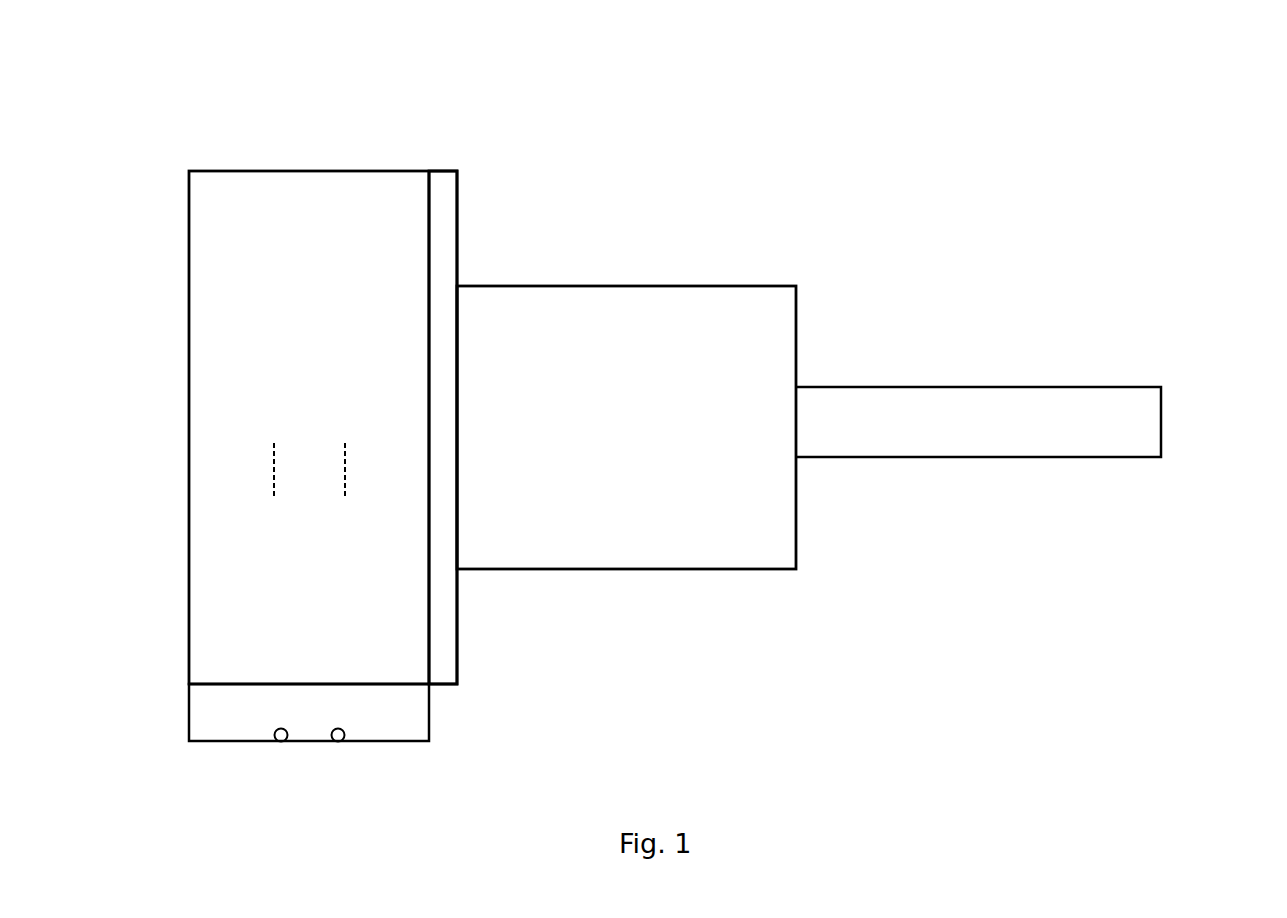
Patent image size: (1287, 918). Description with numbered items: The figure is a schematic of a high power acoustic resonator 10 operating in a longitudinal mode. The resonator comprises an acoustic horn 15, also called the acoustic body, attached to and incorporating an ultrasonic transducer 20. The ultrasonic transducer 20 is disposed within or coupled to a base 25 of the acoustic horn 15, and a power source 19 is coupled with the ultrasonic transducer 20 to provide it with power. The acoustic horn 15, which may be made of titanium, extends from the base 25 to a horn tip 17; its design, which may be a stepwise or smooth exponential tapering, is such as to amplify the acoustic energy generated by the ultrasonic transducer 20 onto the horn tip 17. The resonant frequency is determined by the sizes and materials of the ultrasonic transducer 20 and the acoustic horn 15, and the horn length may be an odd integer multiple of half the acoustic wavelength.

The high power acoustic resonator 10 is at (816, 158).
The acoustic horn 15 is at (563, 286).
The horn tip 17 is at (1161, 421).
The power source 19 is at (330, 741).
The ultrasonic transducer 20 is at (321, 485).
The base 25 is at (457, 642).